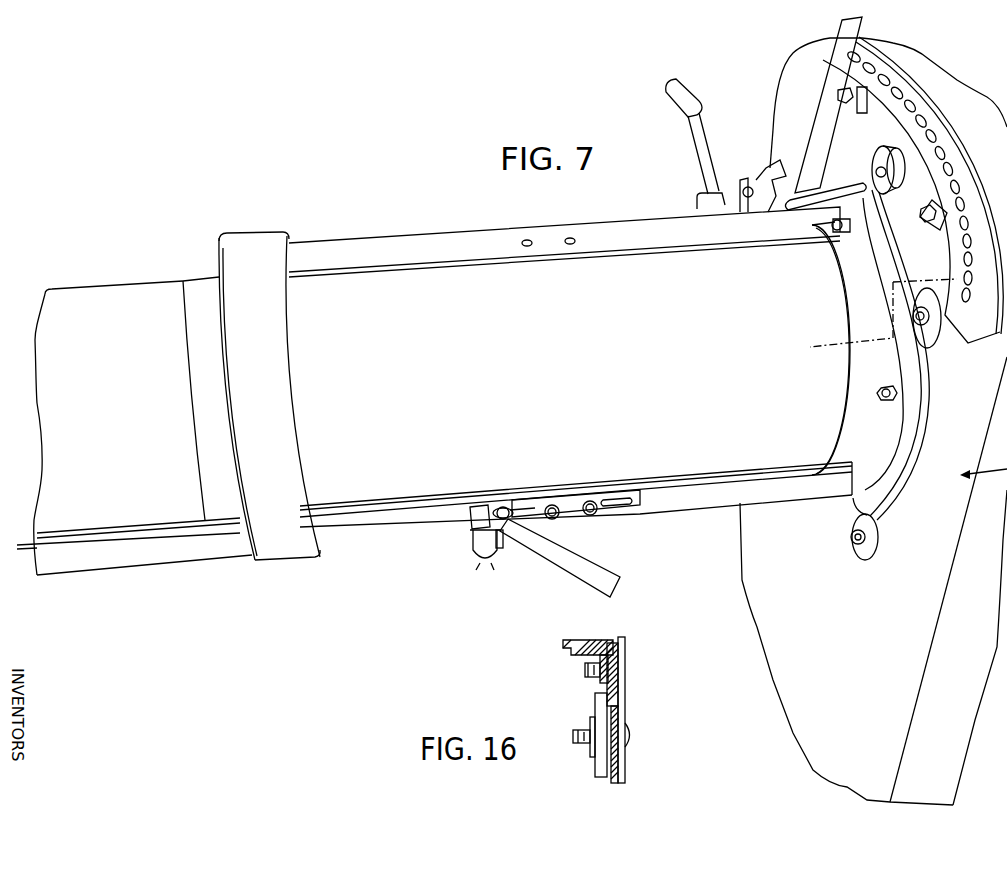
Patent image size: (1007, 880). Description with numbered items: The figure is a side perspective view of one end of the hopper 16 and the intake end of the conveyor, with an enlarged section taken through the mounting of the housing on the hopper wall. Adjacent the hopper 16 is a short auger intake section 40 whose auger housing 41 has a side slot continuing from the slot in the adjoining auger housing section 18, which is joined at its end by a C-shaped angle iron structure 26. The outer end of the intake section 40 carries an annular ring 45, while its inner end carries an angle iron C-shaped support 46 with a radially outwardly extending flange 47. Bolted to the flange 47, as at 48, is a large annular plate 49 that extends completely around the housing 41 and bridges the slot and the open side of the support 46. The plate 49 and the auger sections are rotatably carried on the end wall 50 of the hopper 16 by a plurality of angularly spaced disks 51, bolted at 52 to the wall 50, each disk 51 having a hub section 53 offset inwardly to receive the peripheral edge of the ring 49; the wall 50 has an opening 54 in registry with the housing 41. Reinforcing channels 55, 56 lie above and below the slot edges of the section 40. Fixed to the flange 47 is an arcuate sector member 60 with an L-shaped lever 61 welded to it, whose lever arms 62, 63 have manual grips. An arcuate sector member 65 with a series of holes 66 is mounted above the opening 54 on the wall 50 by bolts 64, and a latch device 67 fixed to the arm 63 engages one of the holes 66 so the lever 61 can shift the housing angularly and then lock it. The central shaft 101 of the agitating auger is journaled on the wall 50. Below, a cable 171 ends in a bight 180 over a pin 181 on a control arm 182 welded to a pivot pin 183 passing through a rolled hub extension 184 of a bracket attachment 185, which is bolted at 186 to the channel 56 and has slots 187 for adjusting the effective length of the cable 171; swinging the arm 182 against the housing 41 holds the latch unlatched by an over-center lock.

In FIG. 7, the hopper 16 is at (823, 360).
In FIG. 7, the auger housing section 18 is at (82, 300).
In FIG. 7, the angle iron structure 26 is at (203, 290).
In FIG. 7, the auger intake section 40 is at (386, 289).
In FIG. 7, the auger housing 41 is at (548, 335).
In FIG. 7, the annular ring 45 is at (270, 412).
In FIG. 7, the C-shaped support 46 is at (842, 262).
In FIG. 16, the C-shaped support 46 is at (565, 642).
In FIG. 7, the radial flange 47 is at (888, 288).
In FIG. 16, the radial flange 47 is at (598, 684).
In FIG. 7, the bolt 48 is at (877, 393).
In FIG. 7, the annular plate 49 is at (895, 479).
In FIG. 16, the annular plate 49 is at (623, 663).
In FIG. 7, the end wall 50 is at (856, 636).
In FIG. 16, the end wall 50 is at (626, 774).
In FIG. 7, the disk 51 is at (934, 333).
In FIG. 16, the disk 51 is at (598, 698).
In FIG. 7, the bolt 52 is at (851, 542).
In FIG. 16, the hub section 53 is at (620, 715).
In FIG. 16, the opening 54 is at (622, 643).
In FIG. 7, the reinforcing channel 55 is at (625, 232).
In FIG. 7, the reinforcing channel 56 is at (709, 512).
In FIG. 7, the sector member 60 is at (823, 196).
In FIG. 7, the L-shaped lever 61 is at (713, 138).
In FIG. 7, the lever arm 62 is at (845, 30).
In FIG. 7, the lever arm 63 is at (703, 157).
In FIG. 7, the bolt 64 is at (848, 104).
In FIG. 7, the sector member 65 is at (952, 172).
In FIG. 7, the hole 66 is at (947, 167).
In FIG. 7, the latch device 67 is at (773, 178).
In FIG. 7, the central shaft 101 is at (866, 172).
In FIG. 7, the cable 171 is at (376, 530).
In FIG. 7, the bight 180 is at (486, 506).
In FIG. 7, the pin 181 is at (501, 506).
In FIG. 7, the control arm 182 is at (578, 566).
In FIG. 7, the pivot pin 183 is at (503, 549).
In FIG. 7, the rolled hub extension 184 is at (478, 543).
In FIG. 7, the bracket attachment 185 is at (568, 500).
In FIG. 7, the bolt 186 is at (607, 498).
In FIG. 7, the slot 187 is at (530, 506).